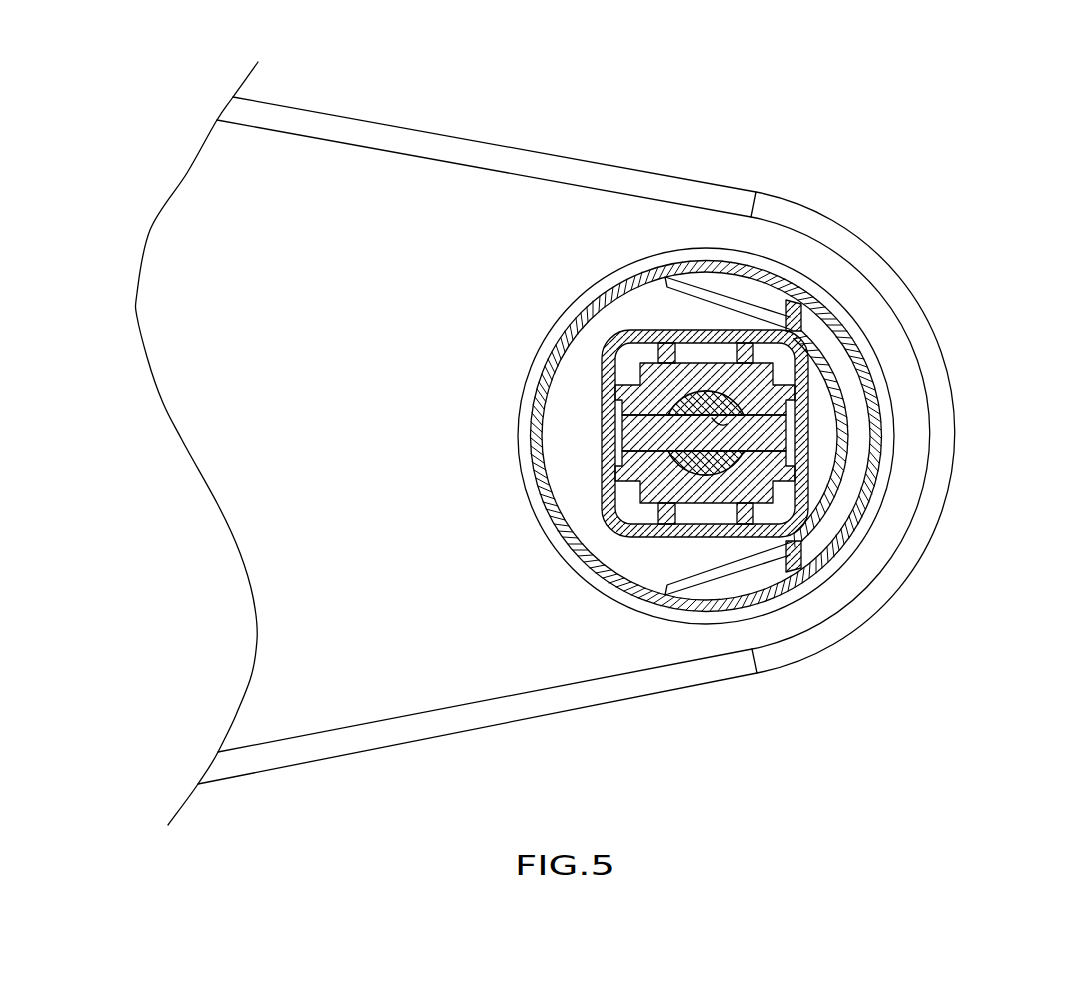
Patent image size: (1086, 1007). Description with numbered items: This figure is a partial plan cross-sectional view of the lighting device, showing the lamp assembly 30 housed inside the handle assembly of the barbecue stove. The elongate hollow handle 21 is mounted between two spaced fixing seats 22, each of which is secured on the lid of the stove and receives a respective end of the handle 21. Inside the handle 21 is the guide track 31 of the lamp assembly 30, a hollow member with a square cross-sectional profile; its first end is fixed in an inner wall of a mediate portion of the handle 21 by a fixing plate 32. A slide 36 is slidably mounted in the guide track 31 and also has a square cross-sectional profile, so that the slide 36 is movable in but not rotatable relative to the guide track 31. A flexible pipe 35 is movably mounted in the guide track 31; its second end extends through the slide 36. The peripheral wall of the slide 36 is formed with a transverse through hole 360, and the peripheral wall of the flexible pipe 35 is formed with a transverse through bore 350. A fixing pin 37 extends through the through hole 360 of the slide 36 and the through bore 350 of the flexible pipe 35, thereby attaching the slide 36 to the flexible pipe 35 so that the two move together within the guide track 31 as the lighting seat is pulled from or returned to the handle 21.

The handle 21 is at (877, 456).
The fixing seat 22 is at (358, 208).
The lamp assembly 30 is at (597, 460).
The guide track 31 is at (642, 537).
The fixing plate 32 is at (845, 418).
The flexible pipe 35 is at (708, 470).
The slide 36 is at (695, 377).
The fixing pin 37 is at (658, 437).
The through bore 350 is at (752, 367).
The through hole 360 is at (753, 453).